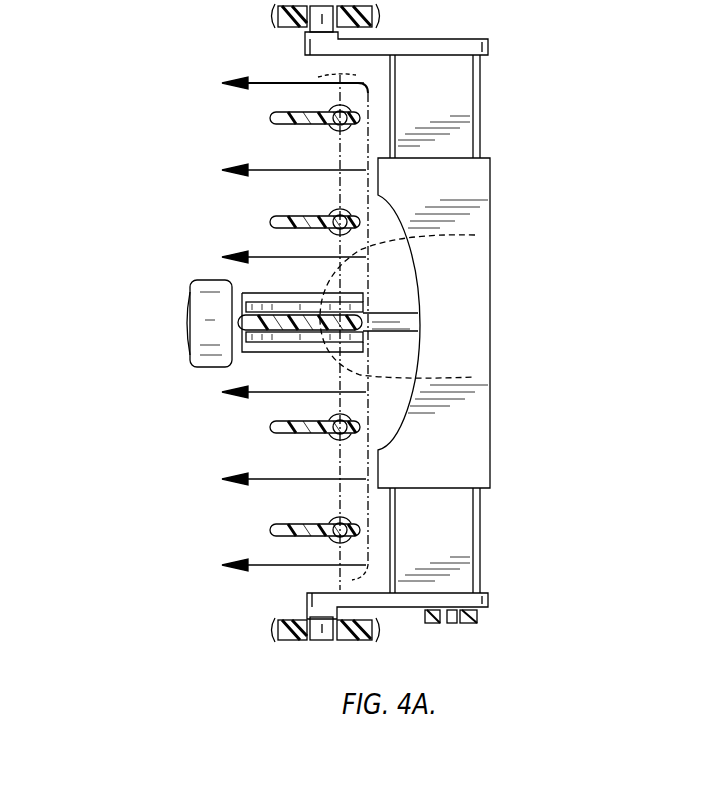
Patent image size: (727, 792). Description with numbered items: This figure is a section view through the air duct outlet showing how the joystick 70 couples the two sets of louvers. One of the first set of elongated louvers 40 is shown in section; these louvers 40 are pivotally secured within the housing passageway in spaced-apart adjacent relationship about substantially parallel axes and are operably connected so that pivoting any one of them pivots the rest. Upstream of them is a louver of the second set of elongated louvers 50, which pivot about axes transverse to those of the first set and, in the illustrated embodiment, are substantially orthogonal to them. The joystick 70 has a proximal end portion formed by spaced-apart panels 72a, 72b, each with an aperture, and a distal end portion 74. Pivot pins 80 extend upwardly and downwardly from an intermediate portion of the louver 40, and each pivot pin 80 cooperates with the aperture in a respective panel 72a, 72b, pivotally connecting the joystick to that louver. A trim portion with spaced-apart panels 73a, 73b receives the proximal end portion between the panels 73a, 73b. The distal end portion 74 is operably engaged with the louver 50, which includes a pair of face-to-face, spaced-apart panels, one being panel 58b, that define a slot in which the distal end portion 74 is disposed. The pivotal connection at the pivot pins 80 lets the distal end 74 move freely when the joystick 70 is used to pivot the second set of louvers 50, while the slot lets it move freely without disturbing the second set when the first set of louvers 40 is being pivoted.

The first set of elongated louvers 40 is at (305, 216).
The second set of elongated louvers 50 is at (480, 97).
The panel 58b is at (470, 452).
The joystick 70 is at (170, 318).
The panel 72a is at (280, 338).
The panel 72b is at (285, 305).
The panel 73a is at (262, 352).
The panel 73b is at (262, 293).
The distal end portion 74 is at (402, 313).
The pivot pins 80 is at (475, 235).